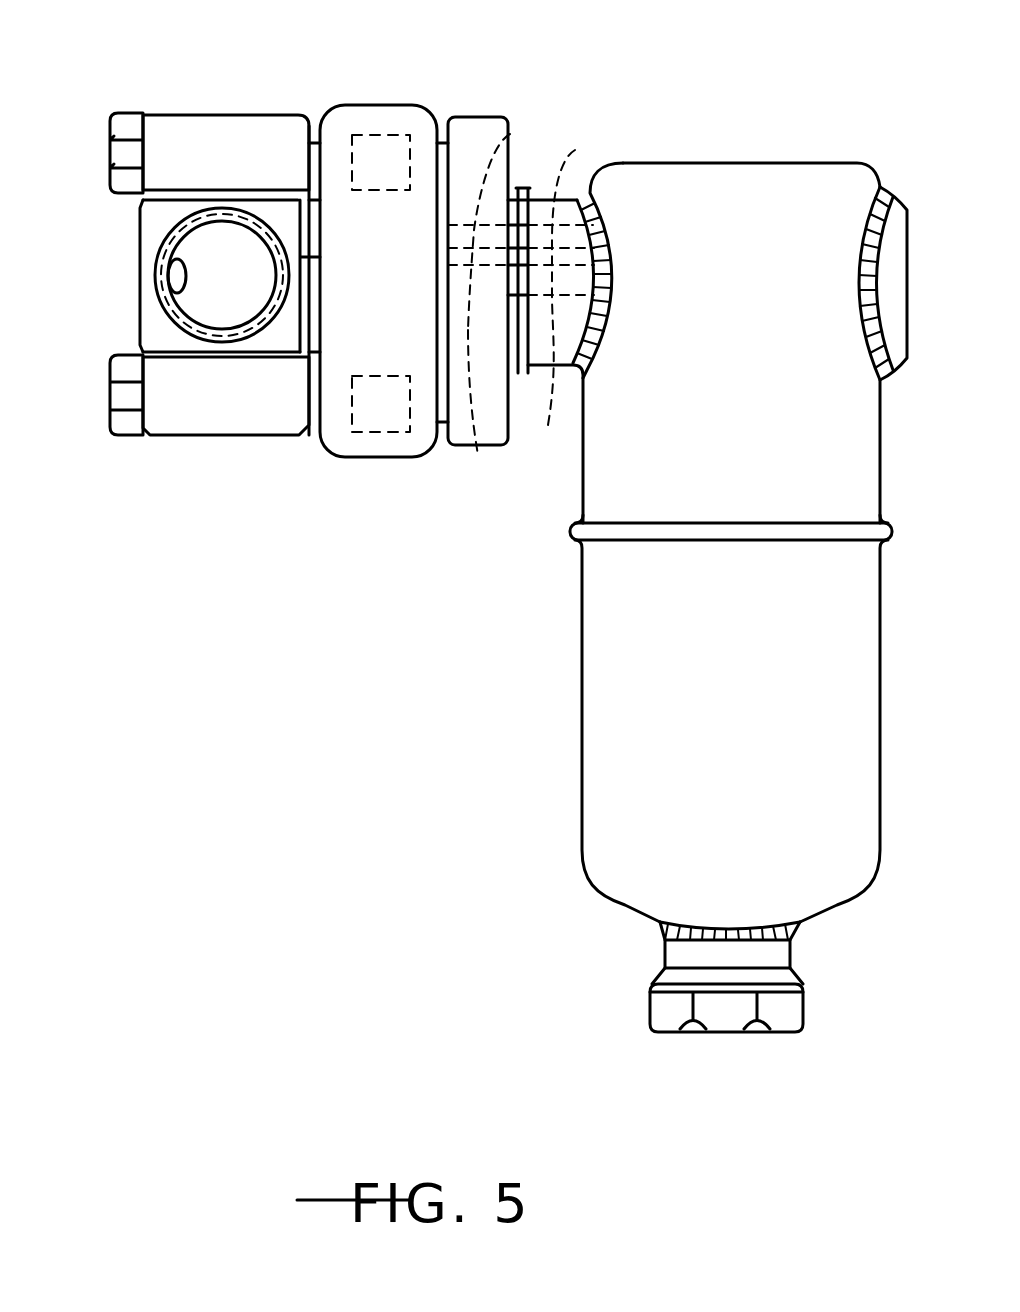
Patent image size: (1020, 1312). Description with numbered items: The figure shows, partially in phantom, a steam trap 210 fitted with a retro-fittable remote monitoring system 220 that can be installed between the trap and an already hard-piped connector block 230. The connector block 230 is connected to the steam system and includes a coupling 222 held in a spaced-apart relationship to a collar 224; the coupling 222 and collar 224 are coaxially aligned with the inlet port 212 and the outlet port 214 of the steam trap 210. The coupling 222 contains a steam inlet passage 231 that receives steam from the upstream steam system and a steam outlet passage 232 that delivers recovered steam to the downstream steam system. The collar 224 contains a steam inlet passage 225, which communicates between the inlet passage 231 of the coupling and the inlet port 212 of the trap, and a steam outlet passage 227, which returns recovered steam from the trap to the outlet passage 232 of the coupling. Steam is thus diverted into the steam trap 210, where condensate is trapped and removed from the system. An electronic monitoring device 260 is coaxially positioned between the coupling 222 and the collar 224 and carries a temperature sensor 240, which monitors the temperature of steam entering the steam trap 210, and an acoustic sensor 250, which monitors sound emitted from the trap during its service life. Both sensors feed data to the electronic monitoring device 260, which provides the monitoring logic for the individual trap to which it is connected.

The steam trap 210 is at (570, 770).
The inlet port 212 is at (545, 311).
The outlet port 214 is at (575, 150).
The remote monitoring system 220 is at (103, 505).
The coupling 222 is at (177, 115).
The collar 224 is at (475, 117).
The steam inlet passage 225 is at (477, 419).
The steam outlet passage 227 is at (510, 134).
The connector block 230 is at (237, 106).
The steam inlet passage 231 is at (135, 322).
The steam outlet passage 232 is at (170, 293).
The temperature sensor 240 is at (378, 135).
The acoustic sensor 250 is at (380, 435).
The electronic monitoring device 260 is at (350, 458).